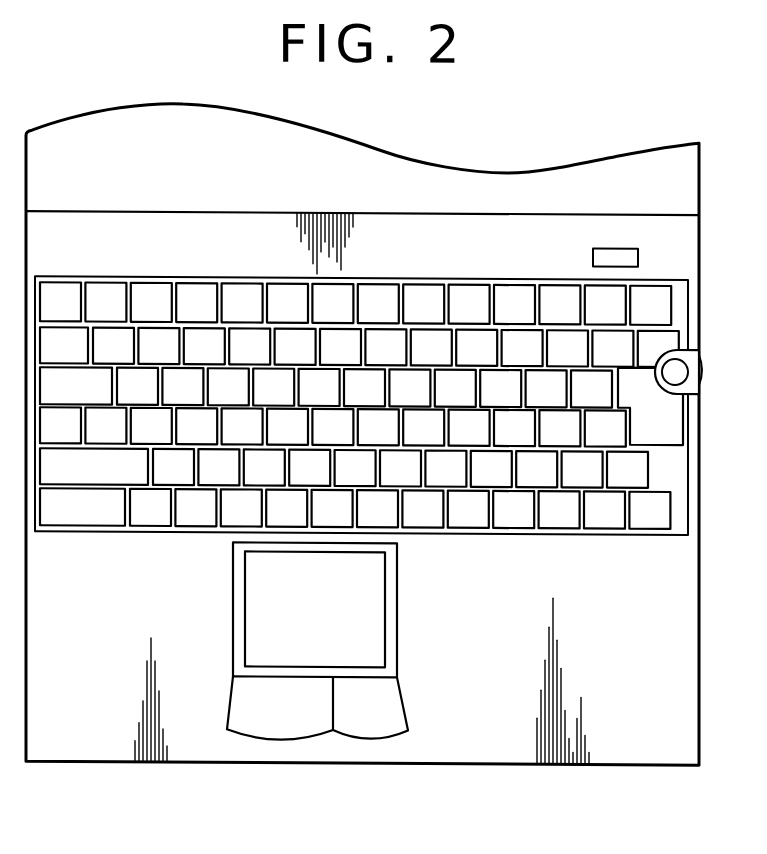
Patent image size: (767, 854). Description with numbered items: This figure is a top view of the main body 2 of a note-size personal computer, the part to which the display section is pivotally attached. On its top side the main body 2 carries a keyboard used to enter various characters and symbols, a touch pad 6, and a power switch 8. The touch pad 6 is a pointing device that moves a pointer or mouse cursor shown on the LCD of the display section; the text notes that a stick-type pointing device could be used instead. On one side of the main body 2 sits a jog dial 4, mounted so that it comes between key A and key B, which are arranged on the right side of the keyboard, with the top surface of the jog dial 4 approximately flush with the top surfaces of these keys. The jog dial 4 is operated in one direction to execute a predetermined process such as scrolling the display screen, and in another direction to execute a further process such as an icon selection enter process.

The main body 2 is at (699, 606).
The jog dial 4 is at (670, 368).
The touch pad 6 is at (276, 635).
The power switch 8 is at (638, 251).
The key A is at (650, 303).
The key B is at (658, 421).